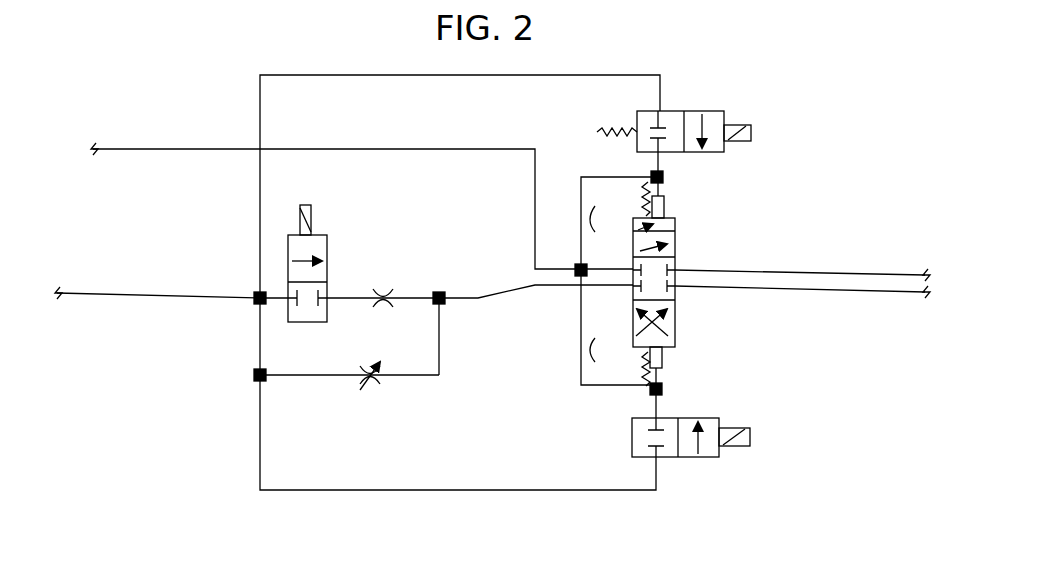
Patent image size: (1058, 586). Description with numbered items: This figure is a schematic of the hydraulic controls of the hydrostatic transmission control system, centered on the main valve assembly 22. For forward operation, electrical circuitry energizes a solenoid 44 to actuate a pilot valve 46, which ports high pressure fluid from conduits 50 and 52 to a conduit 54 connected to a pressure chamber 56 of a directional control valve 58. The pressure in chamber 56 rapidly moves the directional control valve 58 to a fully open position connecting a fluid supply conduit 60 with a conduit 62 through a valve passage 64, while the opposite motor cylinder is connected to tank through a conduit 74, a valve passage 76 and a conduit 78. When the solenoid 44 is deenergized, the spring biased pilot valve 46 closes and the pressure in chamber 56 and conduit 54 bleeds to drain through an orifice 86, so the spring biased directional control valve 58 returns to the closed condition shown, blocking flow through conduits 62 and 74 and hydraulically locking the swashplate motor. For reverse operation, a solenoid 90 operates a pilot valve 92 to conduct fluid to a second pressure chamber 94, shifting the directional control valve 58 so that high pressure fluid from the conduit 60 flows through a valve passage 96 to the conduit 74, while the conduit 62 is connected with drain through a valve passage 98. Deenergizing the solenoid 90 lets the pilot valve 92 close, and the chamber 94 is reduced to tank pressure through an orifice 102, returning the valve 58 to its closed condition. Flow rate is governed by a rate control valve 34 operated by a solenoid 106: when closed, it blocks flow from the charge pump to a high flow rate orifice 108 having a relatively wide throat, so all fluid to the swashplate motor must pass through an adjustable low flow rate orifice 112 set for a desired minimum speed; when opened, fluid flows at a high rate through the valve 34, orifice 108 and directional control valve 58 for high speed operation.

The main valve assembly 22 is at (758, 203).
The rate control valve 34 is at (328, 243).
The solenoid 44 is at (752, 134).
The pilot valve 46 is at (704, 109).
The conduit 50 is at (198, 290).
The conduit 52 is at (260, 96).
The conduit 54 is at (665, 170).
The pressure chamber 56 is at (667, 208).
The directional control valve 58 is at (667, 279).
The fluid supply conduit 60 is at (496, 297).
The conduit 62 is at (922, 294).
The valve passage 64 is at (670, 244).
The conduit 74 is at (930, 262).
The valve passage 76 is at (638, 230).
The conduit 78 is at (422, 149).
The orifice 86 is at (576, 218).
The solenoid 90 is at (752, 436).
The pilot valve 92 is at (697, 461).
The second pressure chamber 94 is at (666, 370).
The valve passage 96 is at (640, 322).
The valve passage 98 is at (668, 340).
The orifice 102 is at (572, 346).
The solenoid 106 is at (320, 198).
The high flow rate orifice 108 is at (385, 292).
The low flow rate orifice 112 is at (370, 388).